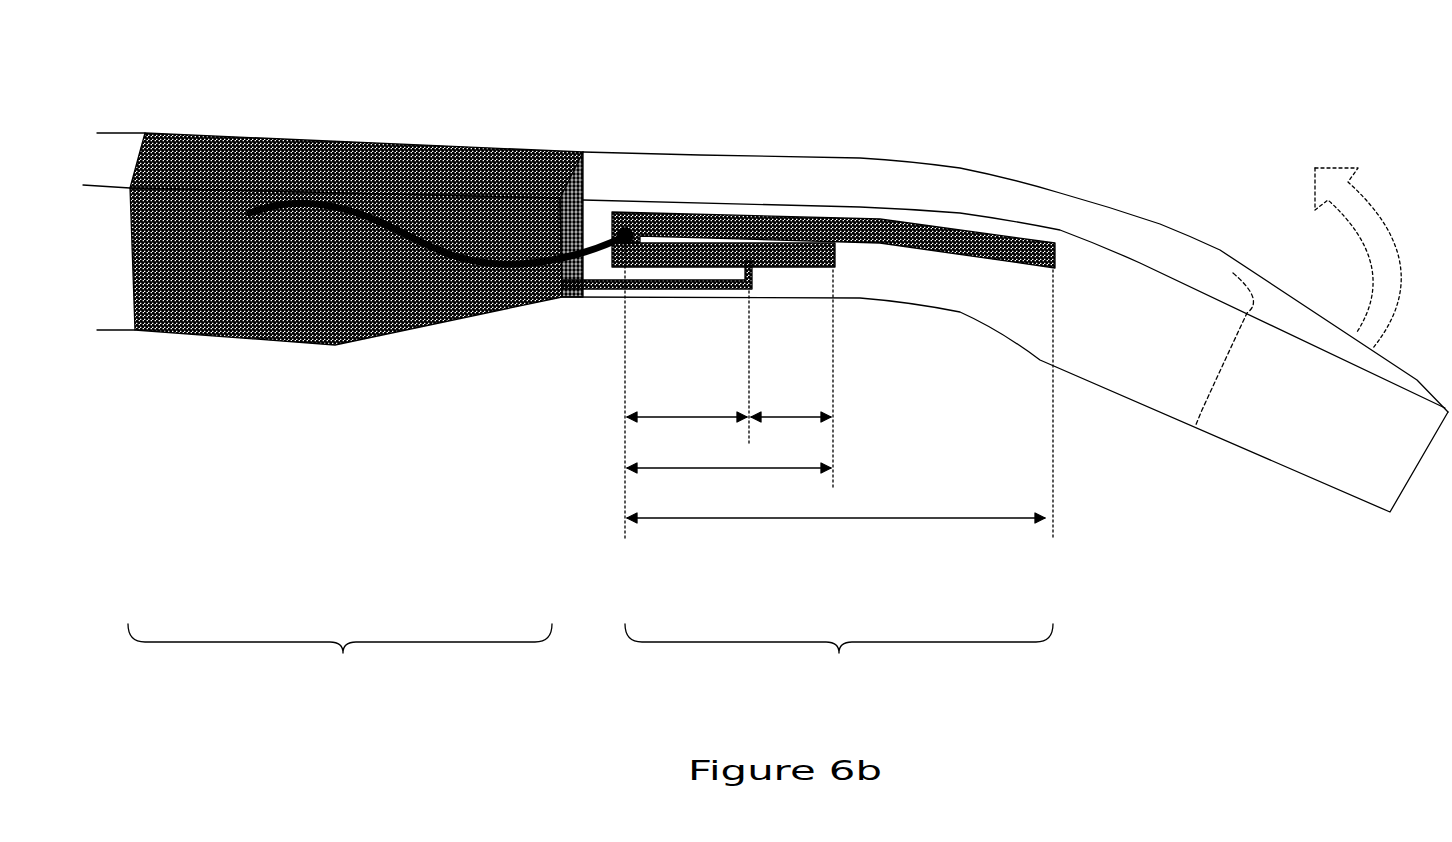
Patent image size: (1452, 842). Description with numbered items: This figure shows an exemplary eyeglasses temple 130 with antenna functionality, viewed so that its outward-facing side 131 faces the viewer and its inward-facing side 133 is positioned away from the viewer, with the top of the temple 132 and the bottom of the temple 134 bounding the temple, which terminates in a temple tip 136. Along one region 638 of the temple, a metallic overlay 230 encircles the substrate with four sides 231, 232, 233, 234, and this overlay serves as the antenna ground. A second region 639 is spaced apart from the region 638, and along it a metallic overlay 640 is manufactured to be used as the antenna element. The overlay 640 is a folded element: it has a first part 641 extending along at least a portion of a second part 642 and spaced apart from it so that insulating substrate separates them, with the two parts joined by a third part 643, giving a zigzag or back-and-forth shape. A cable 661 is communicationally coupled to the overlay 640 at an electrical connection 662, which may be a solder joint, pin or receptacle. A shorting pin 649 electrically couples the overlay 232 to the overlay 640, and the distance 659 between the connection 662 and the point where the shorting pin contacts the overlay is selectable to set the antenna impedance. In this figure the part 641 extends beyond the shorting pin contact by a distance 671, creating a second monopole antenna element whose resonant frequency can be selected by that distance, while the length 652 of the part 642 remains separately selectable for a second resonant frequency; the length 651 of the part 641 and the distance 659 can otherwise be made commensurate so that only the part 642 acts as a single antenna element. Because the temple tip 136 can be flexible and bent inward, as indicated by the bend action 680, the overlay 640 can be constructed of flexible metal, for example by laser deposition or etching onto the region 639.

The temple 130 is at (917, 72).
The outward-facing side 131 is at (1005, 392).
The top of the temple 132 is at (1014, 304).
The inward-facing side 133 is at (1085, 192).
The bottom of the temple 134 is at (1175, 420).
The temple tip 136 is at (1358, 483).
The metallic overlay 230 is at (298, 413).
The side of the metallic overlay 231 is at (346, 266).
The side of the metallic overlay 232 is at (356, 165).
The side of the metallic overlay 233 is at (570, 177).
The side of the metallic overlay 234 is at (563, 277).
The region 638 is at (340, 655).
The region 639 is at (839, 655).
The metallic overlay 640 is at (809, 275).
The first part 641 is at (723, 253).
The second part 642 is at (833, 237).
The third part 643 is at (610, 253).
The shorting pin 649 is at (652, 286).
The length 651 is at (729, 468).
The length 652 is at (836, 518).
The distance 659 is at (687, 417).
The cable 661 is at (483, 267).
The electrical connection 662 is at (629, 228).
The distance 671 is at (791, 417).
The bend action 680 is at (1396, 238).